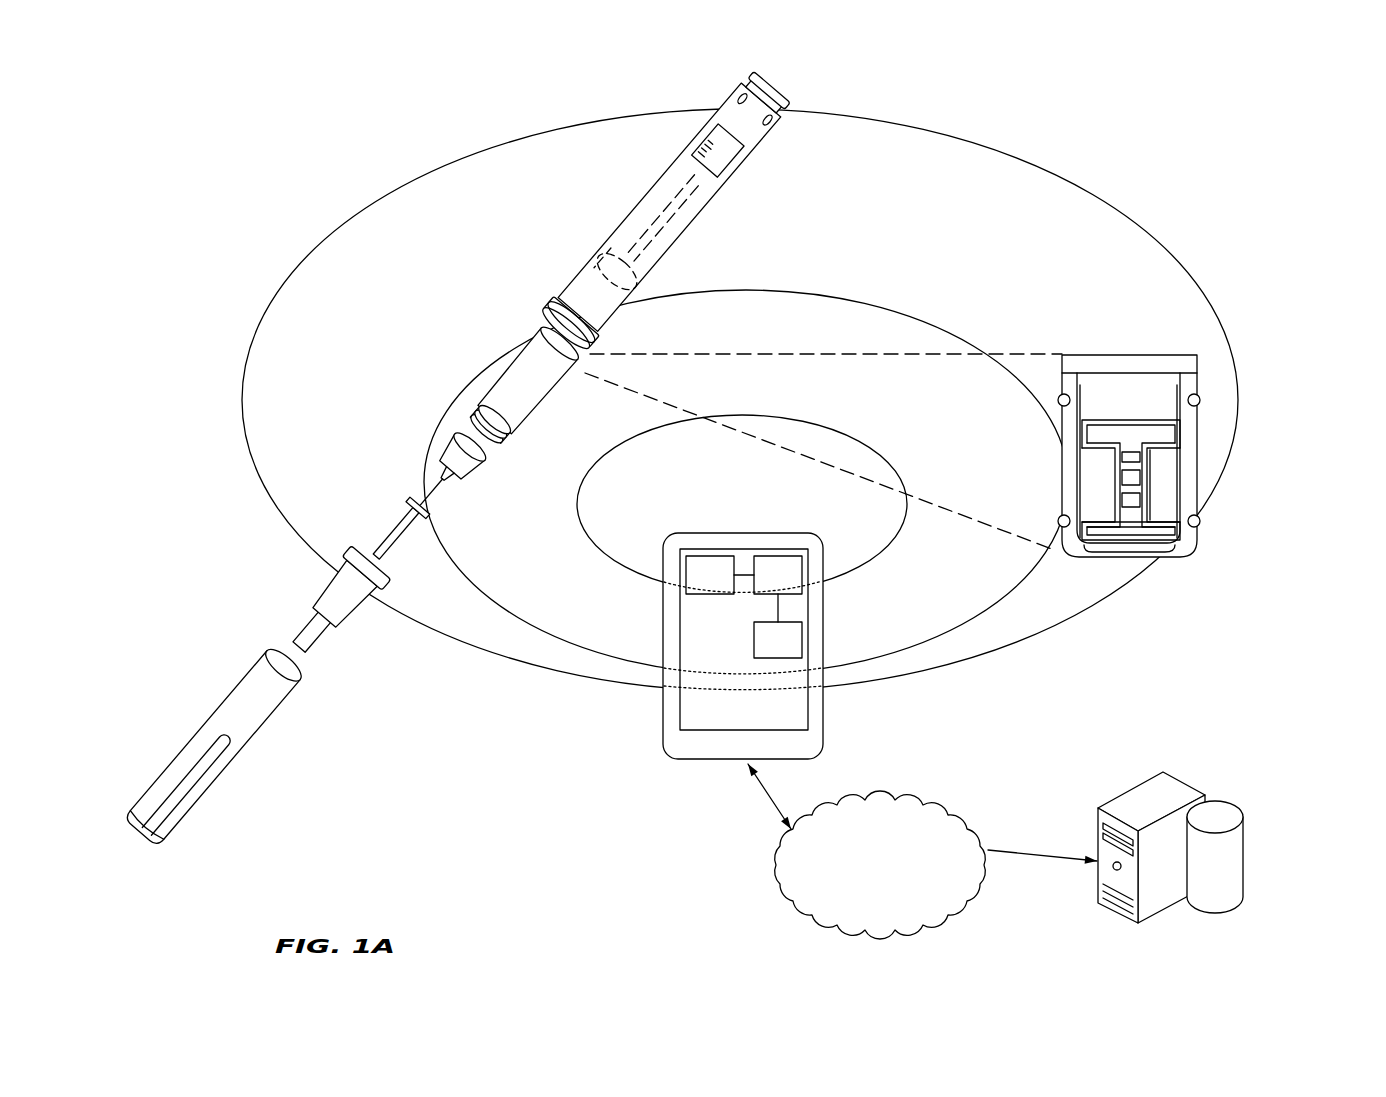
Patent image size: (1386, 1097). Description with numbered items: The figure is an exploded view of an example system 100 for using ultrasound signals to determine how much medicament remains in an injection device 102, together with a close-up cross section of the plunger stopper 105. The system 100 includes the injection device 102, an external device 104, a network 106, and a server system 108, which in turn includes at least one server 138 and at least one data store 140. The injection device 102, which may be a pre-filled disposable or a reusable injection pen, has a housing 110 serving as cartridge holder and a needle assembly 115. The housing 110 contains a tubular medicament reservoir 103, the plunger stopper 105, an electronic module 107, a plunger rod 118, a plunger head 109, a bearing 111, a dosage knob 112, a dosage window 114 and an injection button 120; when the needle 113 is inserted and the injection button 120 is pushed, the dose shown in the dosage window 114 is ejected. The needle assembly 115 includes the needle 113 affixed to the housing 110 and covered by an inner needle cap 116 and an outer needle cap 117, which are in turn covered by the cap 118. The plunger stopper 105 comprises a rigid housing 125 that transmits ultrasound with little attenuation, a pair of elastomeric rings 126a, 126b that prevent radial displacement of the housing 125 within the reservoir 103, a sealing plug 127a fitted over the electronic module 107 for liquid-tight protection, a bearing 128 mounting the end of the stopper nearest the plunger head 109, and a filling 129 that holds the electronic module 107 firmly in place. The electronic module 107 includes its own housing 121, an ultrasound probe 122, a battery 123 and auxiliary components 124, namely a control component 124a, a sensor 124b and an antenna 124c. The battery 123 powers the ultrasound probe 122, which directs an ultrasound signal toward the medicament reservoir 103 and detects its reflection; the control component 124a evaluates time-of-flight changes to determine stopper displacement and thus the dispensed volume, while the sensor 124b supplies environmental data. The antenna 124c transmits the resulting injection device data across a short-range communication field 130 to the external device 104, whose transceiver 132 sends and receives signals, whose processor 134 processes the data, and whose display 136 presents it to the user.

The system 100 is at (222, 155).
The injection device 102 is at (495, 445).
The medicament reservoir 103 is at (493, 390).
The external device 104 is at (716, 677).
The plunger stopper 105 is at (887, 423).
The network 106 is at (945, 810).
The electronic module 107 is at (660, 402).
The server system 108 is at (1174, 861).
The plunger head 109 is at (597, 260).
The housing 110 is at (667, 207).
The bearing 111 is at (608, 250).
The dosage knob 112 is at (737, 100).
The needle 113 is at (423, 487).
The dosage window 114 is at (696, 137).
The needle assembly 115 is at (457, 447).
The inner needle cap 116 is at (402, 505).
The outer needle cap 117 is at (327, 592).
The cap 118 is at (250, 695).
The injection button 120 is at (778, 88).
The housing 121 is at (1180, 532).
The ultrasound probe 122 is at (1060, 551).
The battery 123 is at (1127, 438).
The auxiliary components 124 is at (1133, 473).
The control component 124a is at (1125, 455).
The sensor 124b is at (1123, 477).
The antenna 124c is at (1122, 500).
The housing 125 is at (1125, 548).
The elastomeric ring 126a is at (1195, 402).
The elastomeric ring 126b is at (1197, 522).
The sealing plug 127a is at (1115, 388).
The bearing 128 is at (1180, 367).
The filling 129 is at (1168, 505).
The communication field 130 is at (497, 545).
The transceiver 132 is at (710, 575).
The processor 134 is at (778, 575).
The display 136 is at (778, 640).
The server 138 is at (1182, 785).
The data store 140 is at (1243, 847).